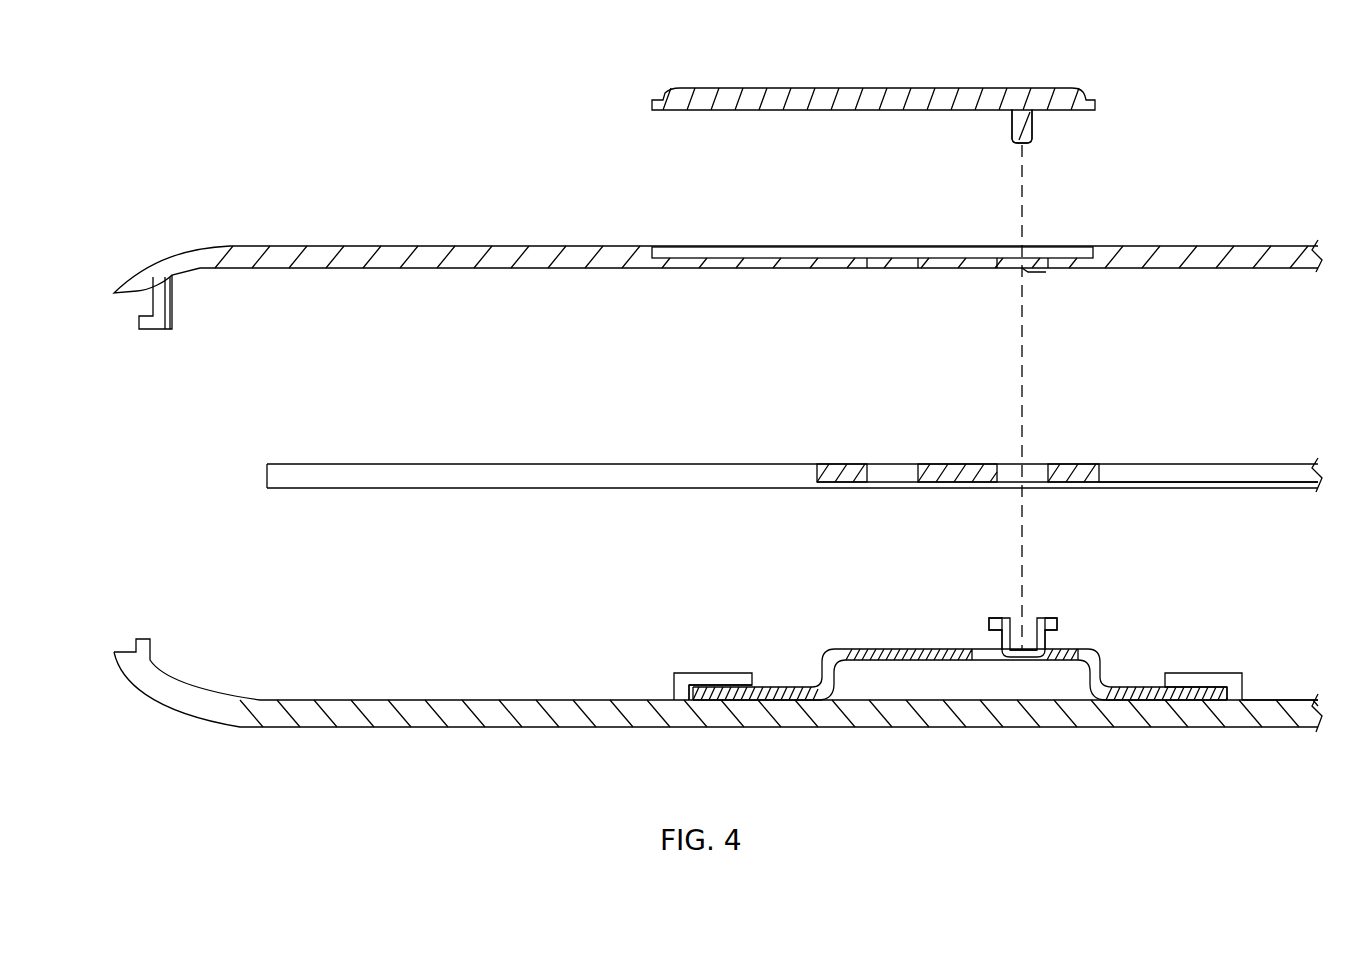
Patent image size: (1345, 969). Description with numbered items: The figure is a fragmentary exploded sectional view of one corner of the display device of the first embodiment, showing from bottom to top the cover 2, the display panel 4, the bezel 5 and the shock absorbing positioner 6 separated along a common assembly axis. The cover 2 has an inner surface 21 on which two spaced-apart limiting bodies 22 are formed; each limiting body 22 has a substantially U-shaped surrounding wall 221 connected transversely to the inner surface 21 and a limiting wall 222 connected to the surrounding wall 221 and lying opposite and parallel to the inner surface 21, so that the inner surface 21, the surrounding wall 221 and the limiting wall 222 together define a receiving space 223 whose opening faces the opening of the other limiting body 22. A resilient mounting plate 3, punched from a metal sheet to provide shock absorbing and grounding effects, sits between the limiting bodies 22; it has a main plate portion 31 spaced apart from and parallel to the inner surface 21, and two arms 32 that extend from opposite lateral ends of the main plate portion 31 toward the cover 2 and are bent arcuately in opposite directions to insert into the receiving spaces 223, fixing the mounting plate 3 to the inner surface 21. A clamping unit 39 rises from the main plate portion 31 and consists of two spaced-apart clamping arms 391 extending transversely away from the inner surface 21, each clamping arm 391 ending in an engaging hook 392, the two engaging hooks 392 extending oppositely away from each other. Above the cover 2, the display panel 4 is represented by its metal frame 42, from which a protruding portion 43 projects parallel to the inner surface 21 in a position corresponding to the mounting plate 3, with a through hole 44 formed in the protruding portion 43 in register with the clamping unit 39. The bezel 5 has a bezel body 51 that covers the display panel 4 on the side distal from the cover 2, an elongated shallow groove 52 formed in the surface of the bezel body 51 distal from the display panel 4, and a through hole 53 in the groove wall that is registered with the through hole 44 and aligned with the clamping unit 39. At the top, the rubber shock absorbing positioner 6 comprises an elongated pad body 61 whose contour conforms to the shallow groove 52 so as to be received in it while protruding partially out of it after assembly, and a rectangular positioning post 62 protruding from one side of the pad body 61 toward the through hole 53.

The cover 2 is at (727, 646).
The inner surface 21 is at (345, 700).
The limiting body 22 is at (664, 664).
The surrounding wall 221 is at (1243, 680).
The limiting wall 222 is at (1200, 673).
The receiving space 223 is at (742, 690).
The resilient mounting plate 3 is at (960, 660).
The main plate portion 31 is at (945, 660).
The arm 32 is at (782, 692).
The clamping unit 39 is at (1029, 602).
The clamping arm 391 is at (1008, 642).
The engaging hook 392 is at (996, 618).
The display panel 4 is at (794, 433).
The frame 42 is at (1212, 470).
The protruding portion 43 is at (1100, 474).
The through hole 44 is at (1003, 464).
The bezel 5 is at (718, 241).
The bezel body 51 is at (1198, 258).
The shallow groove 52 is at (690, 262).
The through hole 53 is at (1025, 268).
The shock absorbing positioner 6 is at (915, 84).
The pad body 61 is at (930, 100).
The positioning post 62 is at (1048, 125).